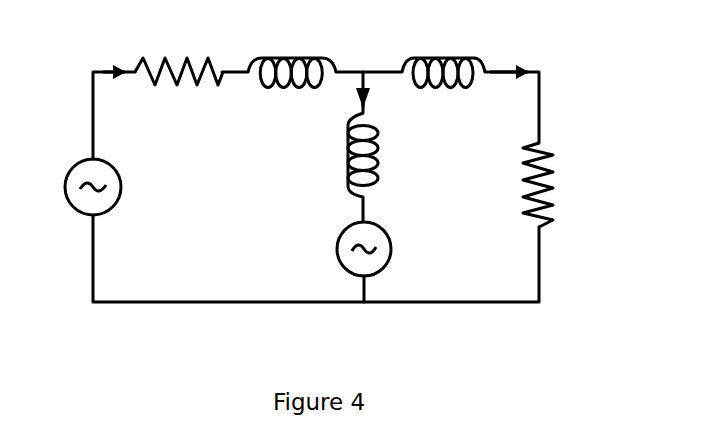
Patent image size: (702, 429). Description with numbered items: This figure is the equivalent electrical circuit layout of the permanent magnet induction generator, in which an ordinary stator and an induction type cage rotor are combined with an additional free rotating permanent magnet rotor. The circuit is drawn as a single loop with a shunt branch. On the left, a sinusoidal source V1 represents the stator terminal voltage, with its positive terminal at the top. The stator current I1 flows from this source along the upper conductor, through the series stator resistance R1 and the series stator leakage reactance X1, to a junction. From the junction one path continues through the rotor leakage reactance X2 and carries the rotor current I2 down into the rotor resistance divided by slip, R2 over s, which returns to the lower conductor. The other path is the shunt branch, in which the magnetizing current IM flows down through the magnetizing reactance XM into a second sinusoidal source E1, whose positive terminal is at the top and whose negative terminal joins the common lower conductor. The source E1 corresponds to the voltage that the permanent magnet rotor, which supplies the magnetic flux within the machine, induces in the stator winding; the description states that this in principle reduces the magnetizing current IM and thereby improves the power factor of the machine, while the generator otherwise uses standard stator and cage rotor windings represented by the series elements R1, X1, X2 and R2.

The stator supply voltage source V1 is at (71, 187).
The stator resistance R1 is at (179, 56).
The stator leakage reactance X1 is at (292, 57).
The rotor leakage reactance referred to stator X2 is at (443, 49).
The magnetizing reactance XM is at (396, 167).
The rotor resistance divided by slip R2 is at (607, 183).
The air-gap voltage E1 is at (343, 250).
The stator current I1 is at (114, 58).
The rotor current referred to stator I2 is at (510, 49).
The magnetizing current IM is at (381, 103).